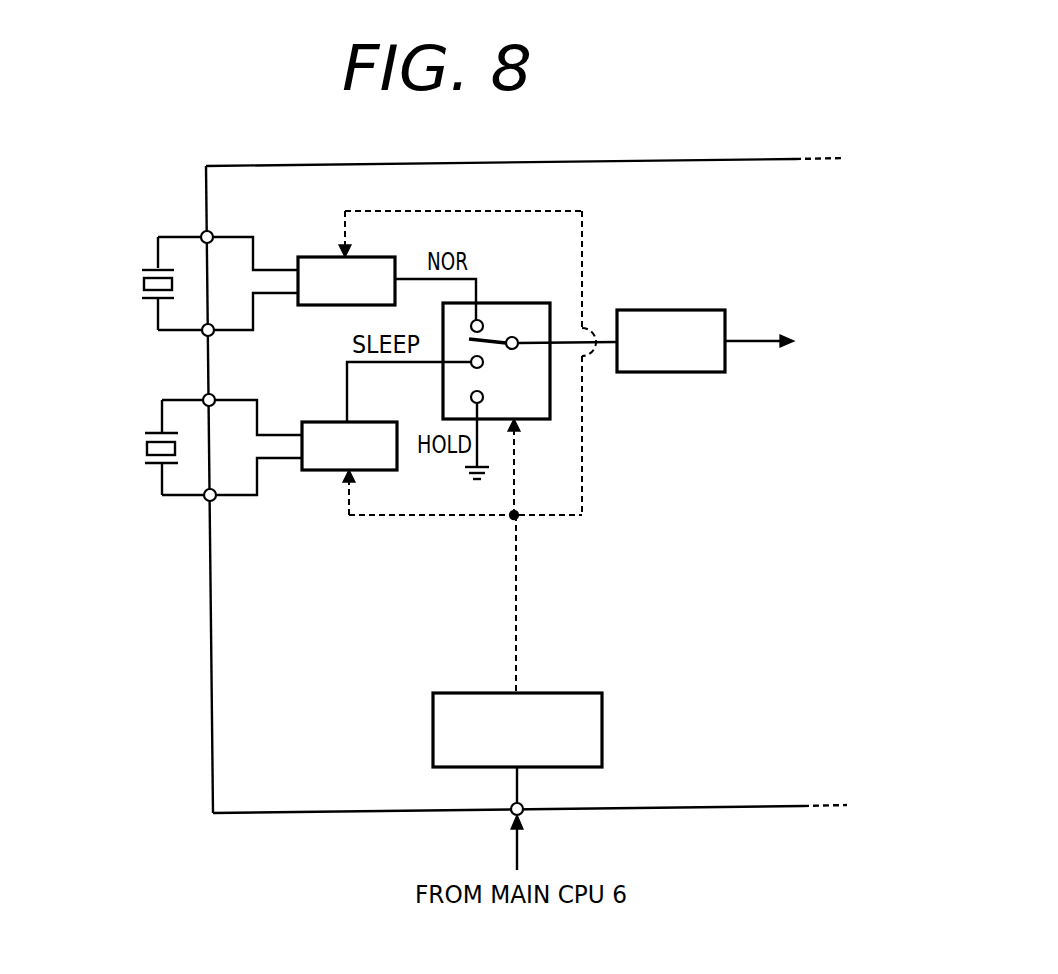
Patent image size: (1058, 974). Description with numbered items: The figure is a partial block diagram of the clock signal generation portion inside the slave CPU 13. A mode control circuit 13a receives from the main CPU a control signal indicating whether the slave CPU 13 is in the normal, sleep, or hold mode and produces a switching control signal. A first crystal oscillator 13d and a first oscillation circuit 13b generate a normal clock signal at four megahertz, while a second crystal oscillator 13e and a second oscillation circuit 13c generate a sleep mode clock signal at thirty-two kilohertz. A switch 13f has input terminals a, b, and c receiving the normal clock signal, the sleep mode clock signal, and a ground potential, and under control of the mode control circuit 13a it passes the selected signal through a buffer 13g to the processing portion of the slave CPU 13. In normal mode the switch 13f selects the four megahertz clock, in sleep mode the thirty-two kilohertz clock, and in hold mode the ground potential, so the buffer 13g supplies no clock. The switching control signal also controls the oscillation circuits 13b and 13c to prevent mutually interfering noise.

The slave CPU 13 is at (739, 160).
The mode control circuit 13a is at (576, 692).
The first oscillation circuit 13b is at (368, 256).
The second oscillation circuit 13c is at (371, 421).
The first crystal oscillator 13d is at (150, 268).
The second crystal oscillator 13e is at (152, 431).
The switch 13f is at (523, 303).
The buffer 13g is at (698, 311).